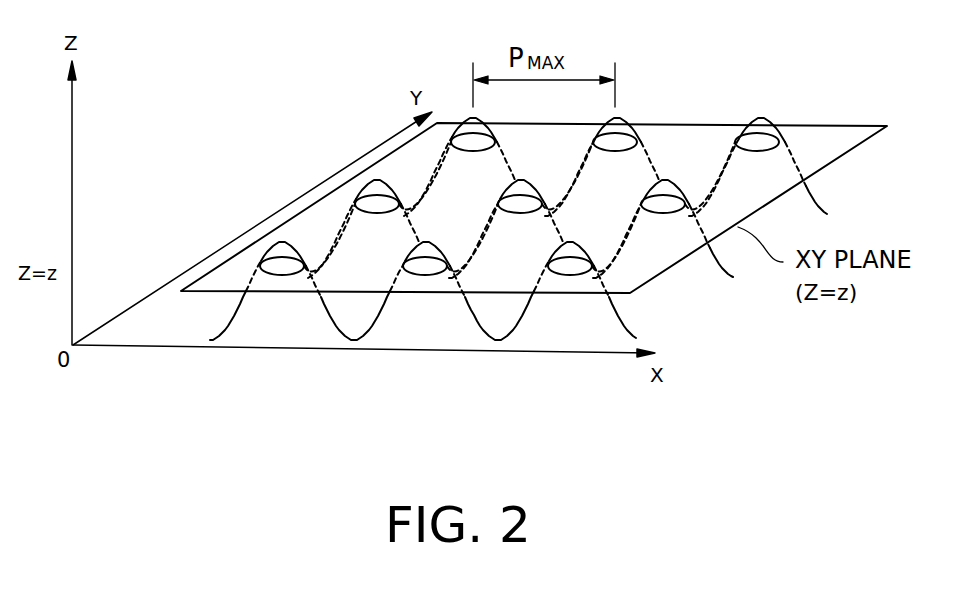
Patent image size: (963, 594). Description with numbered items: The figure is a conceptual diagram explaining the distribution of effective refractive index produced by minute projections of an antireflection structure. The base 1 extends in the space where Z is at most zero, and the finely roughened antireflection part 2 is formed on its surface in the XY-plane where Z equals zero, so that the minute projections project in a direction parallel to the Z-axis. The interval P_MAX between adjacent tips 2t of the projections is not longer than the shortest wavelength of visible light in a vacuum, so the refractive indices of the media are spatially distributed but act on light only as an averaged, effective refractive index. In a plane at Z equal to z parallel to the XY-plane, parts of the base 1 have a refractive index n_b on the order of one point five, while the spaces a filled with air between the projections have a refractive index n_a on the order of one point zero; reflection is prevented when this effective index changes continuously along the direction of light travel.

The base 1 is at (798, 211).
The tips of the minute projections 2t is at (467, 117).
The finely roughened antireflection part 2 is at (757, 127).
The spaces filled with air a is at (660, 110).